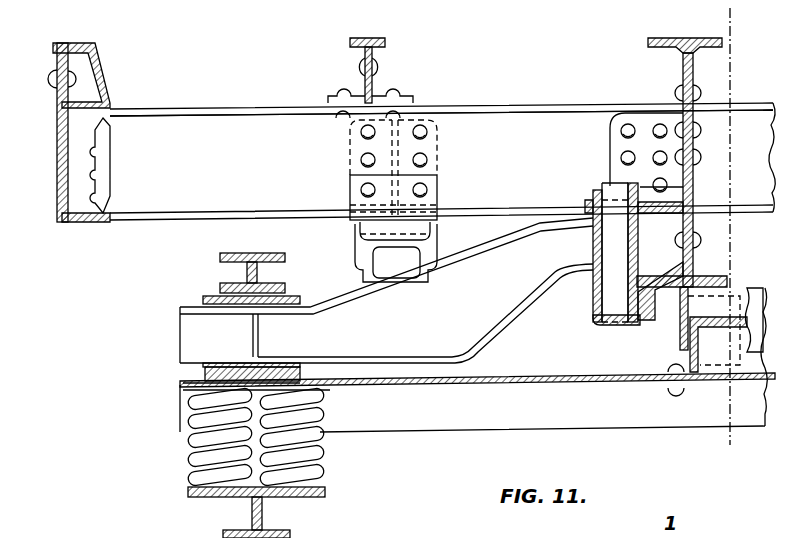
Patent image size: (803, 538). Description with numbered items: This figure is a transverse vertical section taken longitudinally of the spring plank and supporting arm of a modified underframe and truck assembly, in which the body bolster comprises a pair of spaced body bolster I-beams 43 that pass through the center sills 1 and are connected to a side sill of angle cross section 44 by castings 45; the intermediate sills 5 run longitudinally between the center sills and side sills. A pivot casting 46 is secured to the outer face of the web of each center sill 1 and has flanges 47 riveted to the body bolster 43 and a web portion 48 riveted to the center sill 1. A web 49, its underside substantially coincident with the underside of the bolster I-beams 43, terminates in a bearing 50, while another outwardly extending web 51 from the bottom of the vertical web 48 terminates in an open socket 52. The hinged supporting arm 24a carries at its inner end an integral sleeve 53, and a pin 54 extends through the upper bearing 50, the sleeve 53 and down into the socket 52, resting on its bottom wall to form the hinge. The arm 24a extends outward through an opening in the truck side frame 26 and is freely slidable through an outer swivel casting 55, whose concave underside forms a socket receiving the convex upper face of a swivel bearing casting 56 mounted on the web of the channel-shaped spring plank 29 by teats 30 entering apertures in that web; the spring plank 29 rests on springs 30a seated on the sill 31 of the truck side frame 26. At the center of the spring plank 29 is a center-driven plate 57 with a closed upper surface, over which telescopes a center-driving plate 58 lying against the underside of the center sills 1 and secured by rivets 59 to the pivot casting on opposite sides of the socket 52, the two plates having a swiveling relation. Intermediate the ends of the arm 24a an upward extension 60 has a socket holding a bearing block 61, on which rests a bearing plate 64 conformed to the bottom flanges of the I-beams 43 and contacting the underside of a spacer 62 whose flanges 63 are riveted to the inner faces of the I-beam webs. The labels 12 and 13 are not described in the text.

The center sills 1 is at (693, 70).
The intermediate sills 5 is at (355, 47).
The side frame member 12 is at (536, 103).
The centre line / axis 13 is at (410, 98).
The hinged supporting arm 24a is at (463, 320).
The truck side frame 26 is at (227, 256).
The spring plank 29 is at (500, 420).
The teats 30 is at (266, 367).
The springs 30a is at (333, 459).
The sill 31 is at (327, 494).
The body bolster I-beams 43 is at (487, 188).
The side sill 44 is at (58, 62).
The castings 45 is at (92, 83).
The pivot casting 46 is at (681, 88).
The flanges 47 is at (630, 145).
The web portion 48 is at (693, 145).
The web 49 is at (668, 216).
The bearing 50 is at (595, 200).
The outwardly extending web 51 is at (652, 283).
The open socket 52 is at (600, 309).
The sleeve 53 is at (597, 248).
The pin 54 is at (612, 186).
The swivel casting 55 is at (207, 298).
The swivel bearing casting 56 is at (200, 382).
The center-driven plate 57 is at (703, 388).
The center-driving plate 58 is at (679, 338).
The rivets 59 is at (612, 322).
The upward extension 60 is at (372, 260).
The bearing block 61 is at (372, 227).
The spacer 62 is at (402, 147).
The flanges 63 is at (352, 150).
The bearing plate 64 is at (358, 188).